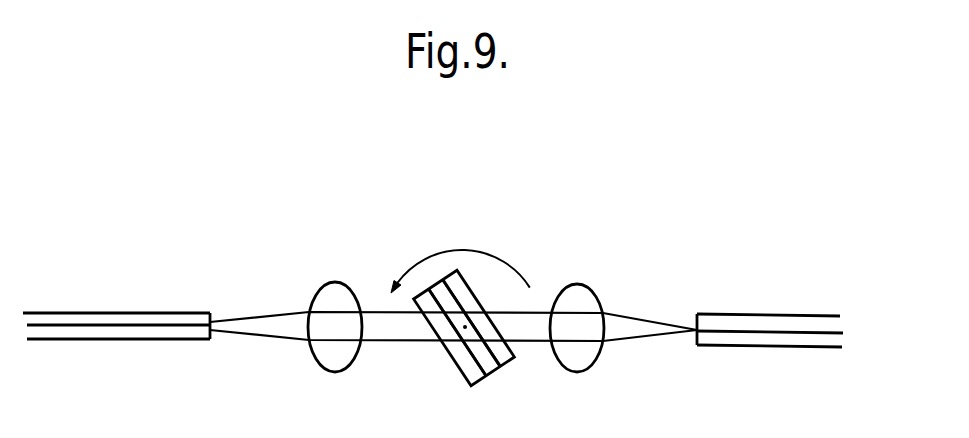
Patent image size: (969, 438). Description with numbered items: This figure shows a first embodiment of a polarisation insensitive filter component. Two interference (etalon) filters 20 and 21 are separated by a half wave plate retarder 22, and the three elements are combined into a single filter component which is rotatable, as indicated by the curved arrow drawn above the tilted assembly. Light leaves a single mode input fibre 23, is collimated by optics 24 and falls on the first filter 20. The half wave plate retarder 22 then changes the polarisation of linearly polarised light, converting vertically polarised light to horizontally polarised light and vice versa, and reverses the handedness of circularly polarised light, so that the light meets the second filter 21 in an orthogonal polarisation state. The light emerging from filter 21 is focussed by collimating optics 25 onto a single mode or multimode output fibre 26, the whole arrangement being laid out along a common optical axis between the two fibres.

The first interference (etalon) filter 20 is at (410, 266).
The second interference (etalon) filter 21 is at (454, 275).
The half wave plate retarder 22 is at (452, 296).
The single mode input fibre 23 is at (95, 334).
The collimating optics 24 is at (335, 375).
The collimating optics 25 is at (577, 373).
The output fibre 26 is at (755, 338).